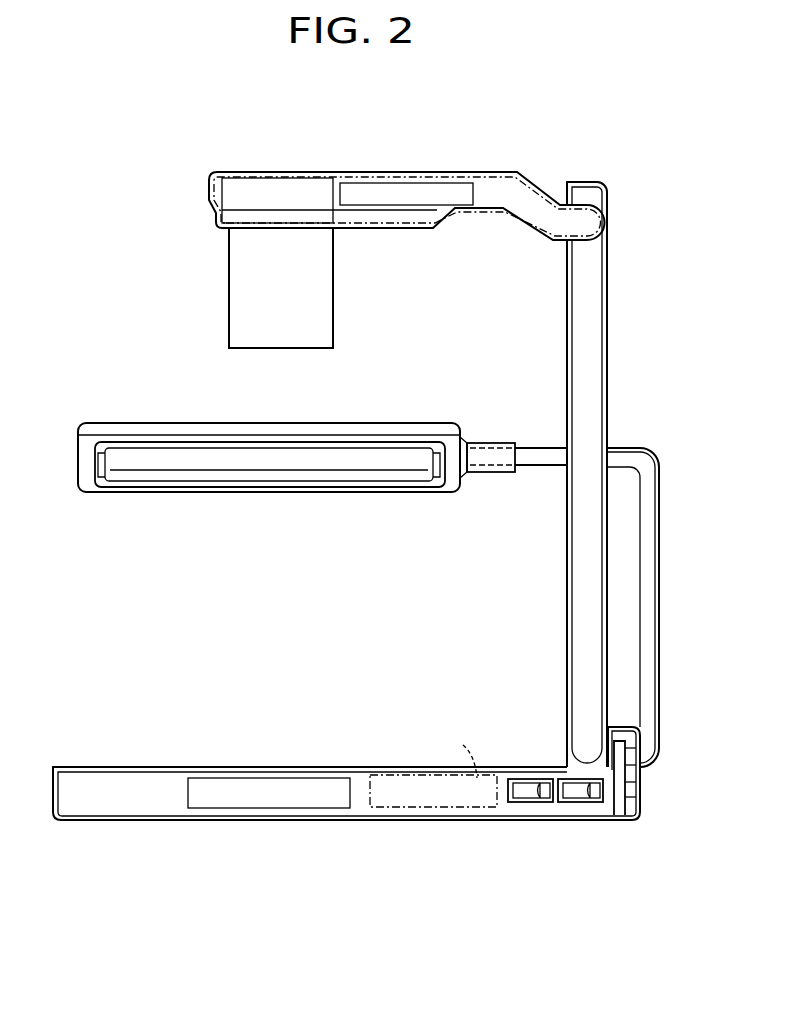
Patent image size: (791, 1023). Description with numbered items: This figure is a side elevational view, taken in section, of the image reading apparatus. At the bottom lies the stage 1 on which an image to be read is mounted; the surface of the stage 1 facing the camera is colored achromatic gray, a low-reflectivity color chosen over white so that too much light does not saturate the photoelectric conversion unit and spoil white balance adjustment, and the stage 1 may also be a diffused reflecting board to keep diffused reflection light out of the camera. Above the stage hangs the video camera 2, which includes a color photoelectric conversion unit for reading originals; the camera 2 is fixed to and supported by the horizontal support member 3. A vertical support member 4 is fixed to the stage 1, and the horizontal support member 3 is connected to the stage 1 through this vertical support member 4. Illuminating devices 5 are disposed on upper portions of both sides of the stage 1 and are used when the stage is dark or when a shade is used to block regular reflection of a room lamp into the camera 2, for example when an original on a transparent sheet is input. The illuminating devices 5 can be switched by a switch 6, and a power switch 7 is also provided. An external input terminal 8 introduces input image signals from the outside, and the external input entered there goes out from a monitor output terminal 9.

The stage 1 is at (243, 775).
The video camera 2 is at (261, 338).
The horizontal support member 3 is at (414, 172).
The vertical support member 4 is at (594, 382).
The illuminating device 5 is at (83, 465).
The switch 6 is at (527, 796).
The power switch 7 is at (577, 796).
The external input terminal 8 is at (633, 752).
The monitor output terminal 9 is at (633, 793).